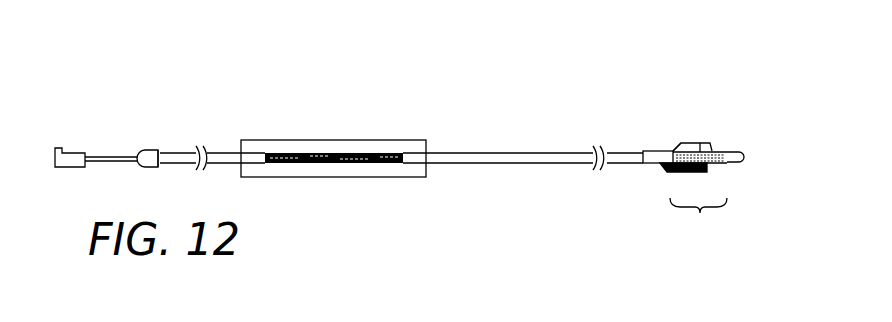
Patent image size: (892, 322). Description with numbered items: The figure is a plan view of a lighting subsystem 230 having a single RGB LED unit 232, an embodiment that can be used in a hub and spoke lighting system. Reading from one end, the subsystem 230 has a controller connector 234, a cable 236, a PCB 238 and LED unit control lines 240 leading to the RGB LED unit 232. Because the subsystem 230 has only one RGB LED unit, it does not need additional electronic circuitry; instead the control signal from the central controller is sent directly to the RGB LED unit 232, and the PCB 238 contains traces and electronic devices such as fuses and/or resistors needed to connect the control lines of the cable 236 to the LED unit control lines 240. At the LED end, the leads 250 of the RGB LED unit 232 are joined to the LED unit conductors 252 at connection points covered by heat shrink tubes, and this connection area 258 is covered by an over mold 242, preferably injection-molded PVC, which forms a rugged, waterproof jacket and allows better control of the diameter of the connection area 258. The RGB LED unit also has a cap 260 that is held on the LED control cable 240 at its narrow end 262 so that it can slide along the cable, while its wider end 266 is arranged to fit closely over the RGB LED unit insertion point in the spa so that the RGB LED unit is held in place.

The lighting subsystem 230 is at (244, 63).
The RGB LED unit 232 is at (745, 157).
The controller connector 234 is at (73, 150).
The cable 236 is at (178, 150).
The PCB 238 is at (328, 145).
The LED unit control lines 240 is at (460, 165).
The over mold 242 is at (695, 145).
The leads 250 is at (717, 150).
The LED unit conductors 252 is at (680, 145).
The connection area 258 is at (700, 214).
The cap 260 is at (654, 180).
The narrow end 262 is at (652, 150).
The wider end 266 is at (700, 145).